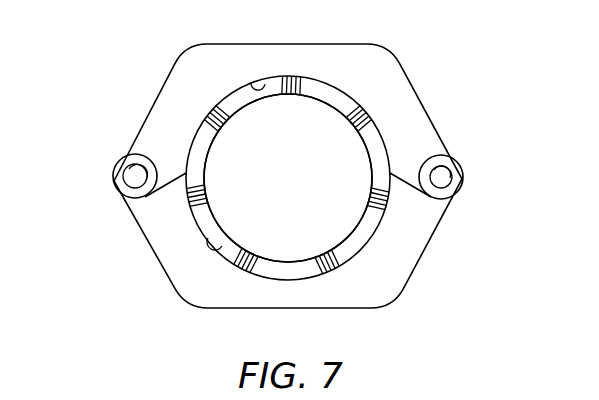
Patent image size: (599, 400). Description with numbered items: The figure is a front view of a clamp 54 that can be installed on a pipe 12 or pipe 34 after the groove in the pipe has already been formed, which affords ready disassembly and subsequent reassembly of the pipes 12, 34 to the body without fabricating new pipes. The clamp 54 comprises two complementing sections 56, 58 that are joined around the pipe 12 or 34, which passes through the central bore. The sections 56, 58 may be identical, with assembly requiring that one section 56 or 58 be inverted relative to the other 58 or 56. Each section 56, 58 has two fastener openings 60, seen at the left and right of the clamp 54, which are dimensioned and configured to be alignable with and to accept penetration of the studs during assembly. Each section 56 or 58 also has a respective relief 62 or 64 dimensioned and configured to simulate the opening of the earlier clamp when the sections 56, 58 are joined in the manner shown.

The clamp 54 is at (457, 82).
The complementing section 56 is at (384, 73).
The complementing section 58 is at (384, 294).
The fastener openings 60 is at (116, 182).
The relief 62 is at (259, 82).
The relief 64 is at (210, 243).
The pipe 12 is at (372, 155).
The pipe 34 is at (288, 178).